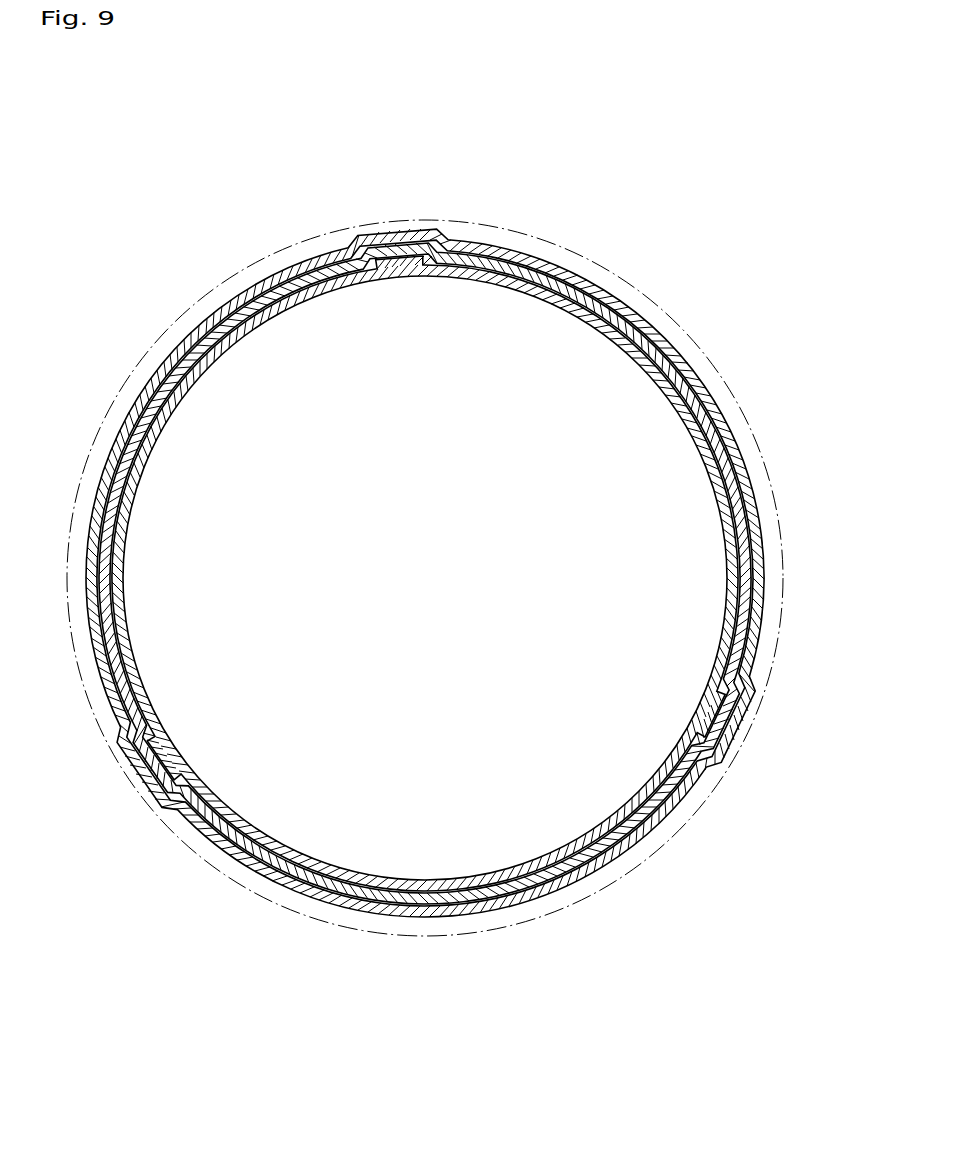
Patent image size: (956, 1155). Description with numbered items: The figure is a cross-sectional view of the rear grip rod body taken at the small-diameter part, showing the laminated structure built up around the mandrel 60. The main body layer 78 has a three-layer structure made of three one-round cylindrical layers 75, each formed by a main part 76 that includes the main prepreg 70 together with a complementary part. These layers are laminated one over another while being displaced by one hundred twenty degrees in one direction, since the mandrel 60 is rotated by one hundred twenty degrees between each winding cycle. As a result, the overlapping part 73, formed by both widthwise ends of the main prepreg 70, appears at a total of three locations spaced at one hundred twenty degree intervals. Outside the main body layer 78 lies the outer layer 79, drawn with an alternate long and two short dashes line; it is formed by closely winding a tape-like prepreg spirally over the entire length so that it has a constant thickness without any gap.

The mandrel 60 is at (502, 850).
The main prepreg 70 is at (618, 300).
The main part 76 is at (465, 556).
The overlapping part 73 is at (395, 228).
The one-round cylindrical layer 75 is at (240, 287).
The main body layer 78 is at (235, 165).
The outer layer 79 is at (528, 237).